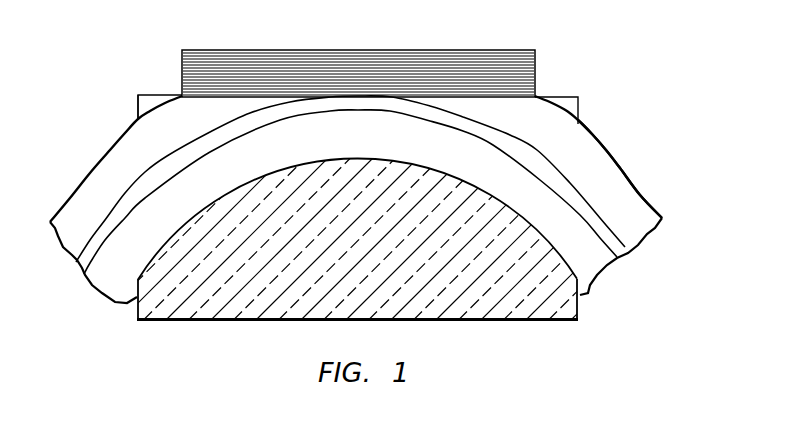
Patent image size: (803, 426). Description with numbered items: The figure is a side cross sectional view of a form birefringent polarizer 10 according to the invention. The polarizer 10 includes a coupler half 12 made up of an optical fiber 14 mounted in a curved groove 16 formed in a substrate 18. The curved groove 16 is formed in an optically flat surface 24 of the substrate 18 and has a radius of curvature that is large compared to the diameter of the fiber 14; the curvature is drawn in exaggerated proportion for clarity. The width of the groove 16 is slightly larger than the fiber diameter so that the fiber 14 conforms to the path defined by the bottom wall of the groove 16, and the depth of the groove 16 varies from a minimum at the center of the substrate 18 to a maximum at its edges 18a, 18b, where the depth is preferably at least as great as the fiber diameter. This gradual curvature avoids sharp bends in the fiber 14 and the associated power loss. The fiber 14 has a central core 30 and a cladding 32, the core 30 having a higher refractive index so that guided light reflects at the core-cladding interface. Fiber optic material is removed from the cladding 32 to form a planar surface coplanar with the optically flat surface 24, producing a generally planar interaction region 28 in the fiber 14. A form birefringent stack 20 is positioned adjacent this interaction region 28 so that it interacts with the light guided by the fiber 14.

The form birefringent polarizer 10 is at (465, 46).
The coupler half 12 is at (580, 310).
The optical fiber 14 is at (103, 156).
The curved groove 16 is at (195, 216).
The substrate 18 is at (522, 321).
The edge of substrate 18a is at (137, 100).
The edge of substrate 18b is at (581, 102).
The form birefringent stack 20 is at (237, 50).
The optically flat surface 24 is at (156, 96).
The interaction region 28 is at (358, 98).
The central core 30 is at (561, 192).
The cladding 32 is at (596, 138).